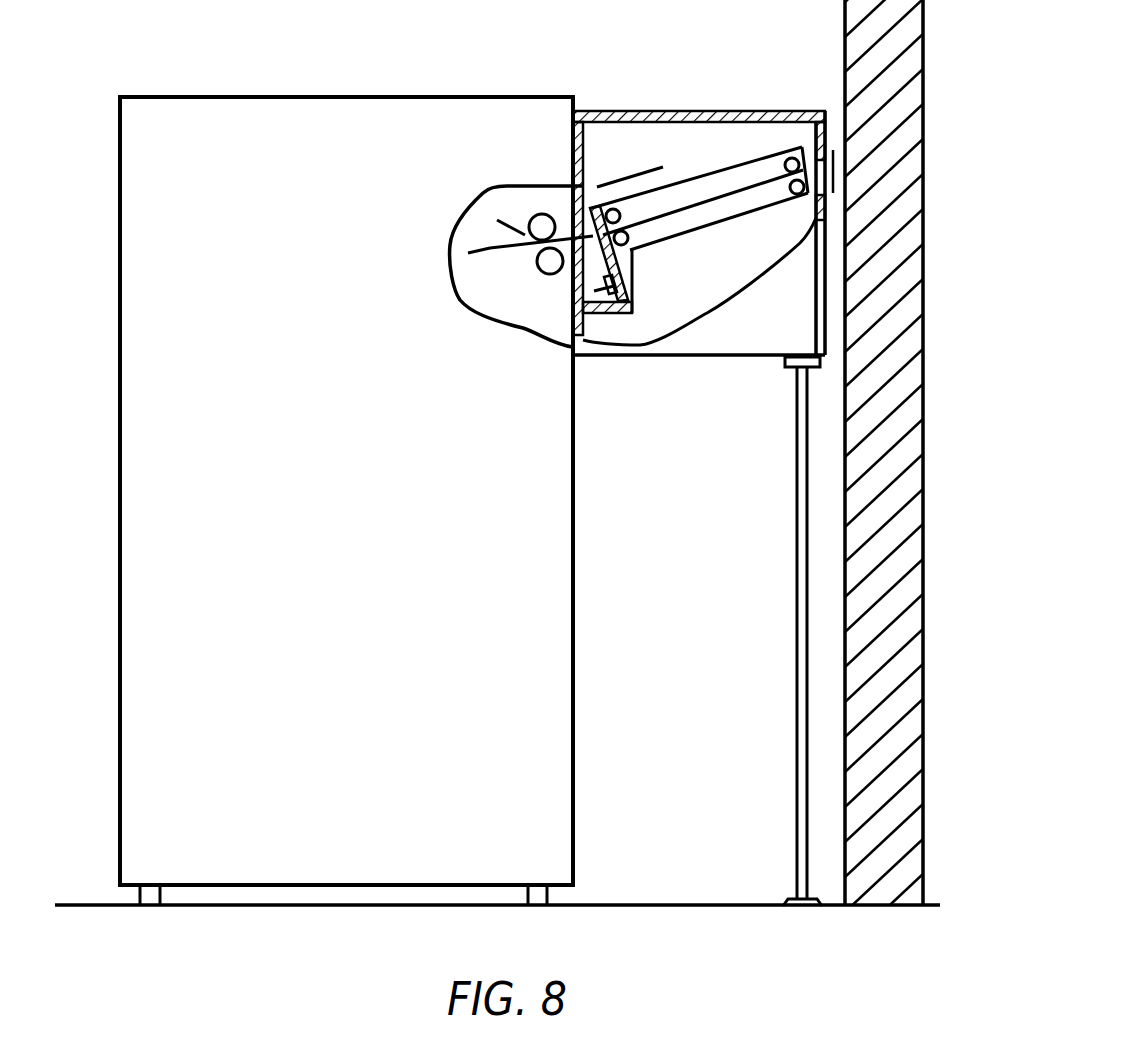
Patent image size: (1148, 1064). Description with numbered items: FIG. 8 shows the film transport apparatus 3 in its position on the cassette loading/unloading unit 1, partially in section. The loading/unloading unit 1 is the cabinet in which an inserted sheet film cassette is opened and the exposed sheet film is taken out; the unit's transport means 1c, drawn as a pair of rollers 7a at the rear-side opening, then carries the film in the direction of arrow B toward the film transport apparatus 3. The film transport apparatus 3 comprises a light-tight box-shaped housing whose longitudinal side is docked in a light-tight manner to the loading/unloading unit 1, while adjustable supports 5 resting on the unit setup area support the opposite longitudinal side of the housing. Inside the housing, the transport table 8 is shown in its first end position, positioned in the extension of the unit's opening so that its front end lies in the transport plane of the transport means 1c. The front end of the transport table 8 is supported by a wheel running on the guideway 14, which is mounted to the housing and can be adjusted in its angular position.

The loading/unloading unit 1 is at (197, 97).
The transport means 1c is at (483, 193).
The film transport apparatus 3 is at (664, 105).
The adjustable supports 5 is at (798, 828).
The feed rollers 7a is at (576, 203).
The transport table 8 is at (714, 148).
The guideway 14 is at (613, 312).